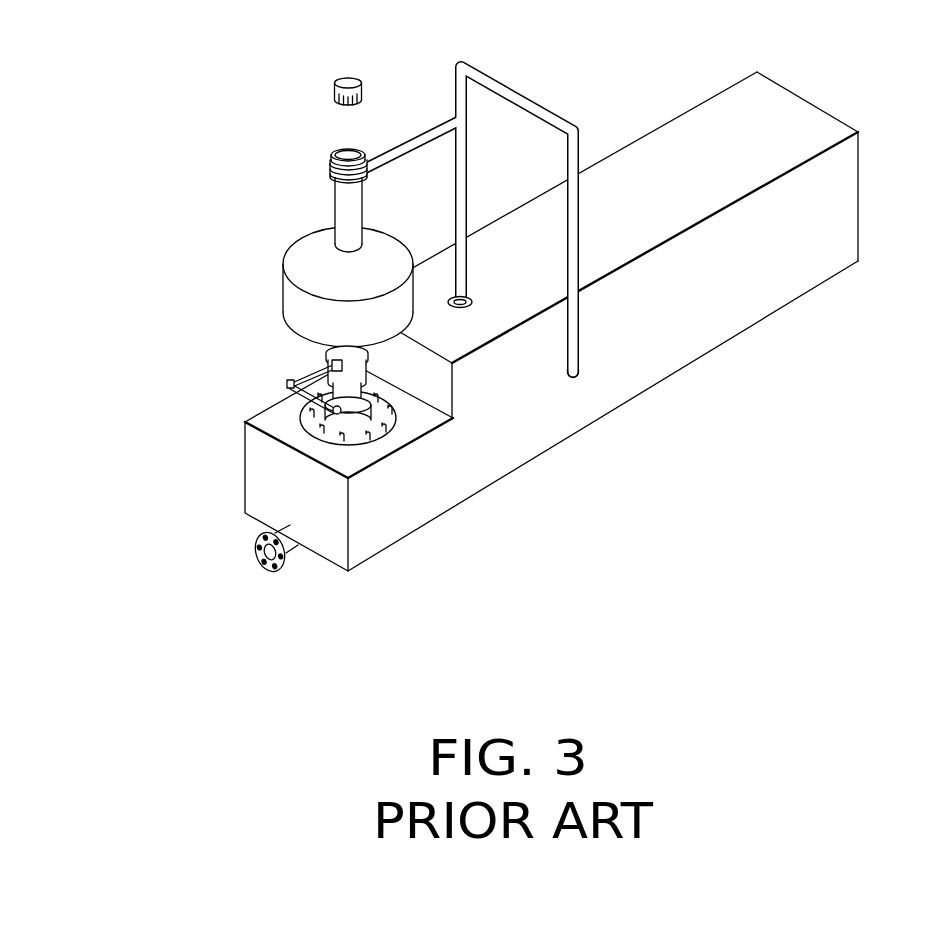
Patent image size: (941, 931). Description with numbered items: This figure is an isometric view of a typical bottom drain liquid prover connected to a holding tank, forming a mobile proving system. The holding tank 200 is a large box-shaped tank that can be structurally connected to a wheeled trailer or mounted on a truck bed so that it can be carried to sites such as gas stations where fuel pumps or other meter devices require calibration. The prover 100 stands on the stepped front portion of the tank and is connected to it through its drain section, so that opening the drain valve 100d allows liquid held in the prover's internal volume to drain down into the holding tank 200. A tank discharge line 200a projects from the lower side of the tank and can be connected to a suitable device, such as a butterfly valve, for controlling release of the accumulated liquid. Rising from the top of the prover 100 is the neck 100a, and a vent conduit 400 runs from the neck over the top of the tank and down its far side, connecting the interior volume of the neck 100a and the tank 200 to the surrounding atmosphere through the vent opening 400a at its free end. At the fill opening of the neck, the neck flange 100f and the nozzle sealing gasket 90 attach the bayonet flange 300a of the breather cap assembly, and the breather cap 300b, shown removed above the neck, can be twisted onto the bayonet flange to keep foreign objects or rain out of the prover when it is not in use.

The holding tank 200 is at (688, 127).
The tank discharge line 200a is at (300, 547).
The vent conduit 400 is at (528, 104).
The vent opening 400a is at (575, 391).
The prover 100 is at (233, 175).
The neck 100a is at (353, 215).
The drain valve 100d is at (313, 354).
The neck flange 100f is at (333, 176).
The nozzle sealing gasket 90 is at (330, 169).
The bayonet flange 300a is at (331, 153).
The breather cap 300b is at (337, 93).